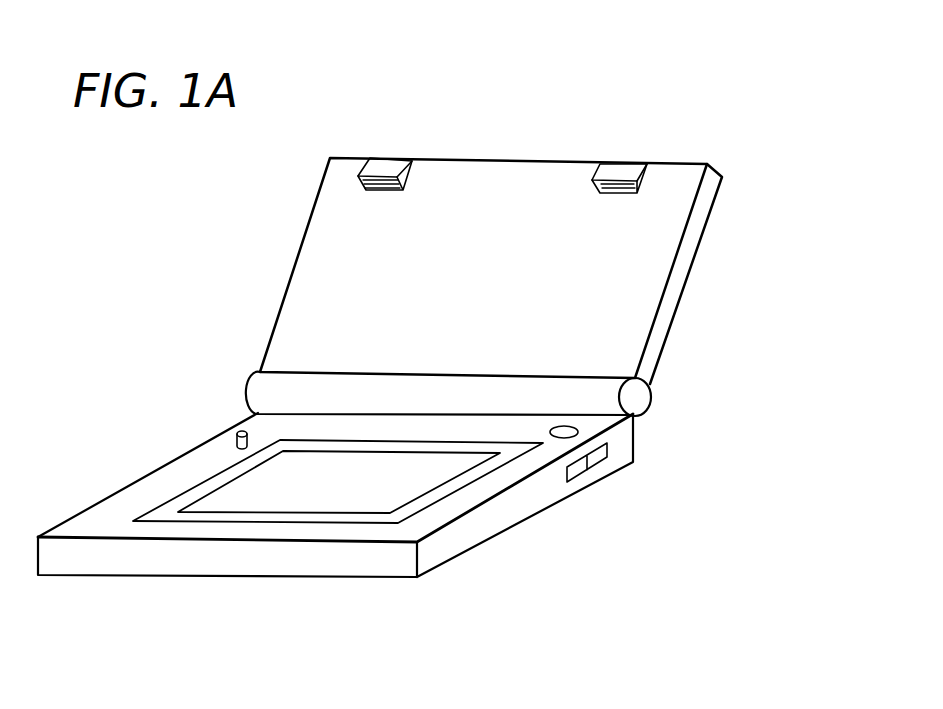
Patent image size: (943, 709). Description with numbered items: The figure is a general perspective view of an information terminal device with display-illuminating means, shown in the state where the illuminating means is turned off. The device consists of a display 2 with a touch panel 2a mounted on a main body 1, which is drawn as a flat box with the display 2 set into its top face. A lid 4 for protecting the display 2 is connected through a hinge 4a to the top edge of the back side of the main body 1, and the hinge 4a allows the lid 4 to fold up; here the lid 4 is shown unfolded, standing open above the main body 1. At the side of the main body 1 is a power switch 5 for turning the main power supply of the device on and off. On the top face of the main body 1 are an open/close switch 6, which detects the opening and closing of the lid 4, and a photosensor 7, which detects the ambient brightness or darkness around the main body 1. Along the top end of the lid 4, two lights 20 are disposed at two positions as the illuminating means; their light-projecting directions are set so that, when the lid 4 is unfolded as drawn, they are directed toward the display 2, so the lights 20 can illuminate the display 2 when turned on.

The main body 1 is at (455, 535).
The display 2 is at (215, 517).
The touch panel 2a is at (230, 490).
The lid 4 is at (317, 248).
The hinge 4a is at (645, 391).
The power switch 5 is at (578, 468).
The open/close switch 6 is at (236, 430).
The photosensor 7 is at (578, 432).
The light 20 is at (622, 172).